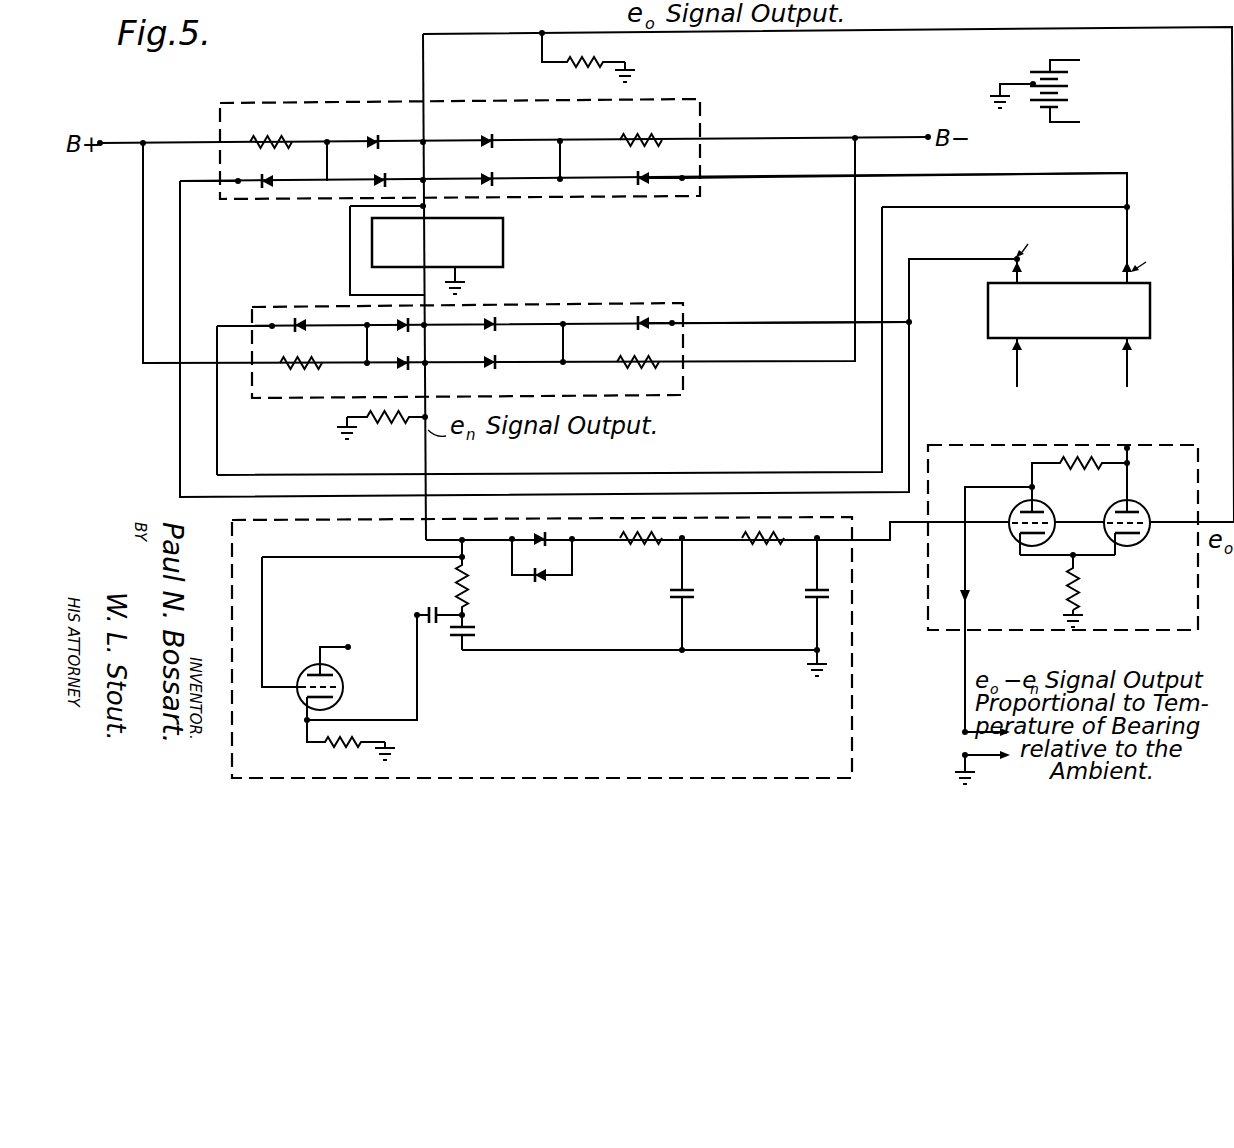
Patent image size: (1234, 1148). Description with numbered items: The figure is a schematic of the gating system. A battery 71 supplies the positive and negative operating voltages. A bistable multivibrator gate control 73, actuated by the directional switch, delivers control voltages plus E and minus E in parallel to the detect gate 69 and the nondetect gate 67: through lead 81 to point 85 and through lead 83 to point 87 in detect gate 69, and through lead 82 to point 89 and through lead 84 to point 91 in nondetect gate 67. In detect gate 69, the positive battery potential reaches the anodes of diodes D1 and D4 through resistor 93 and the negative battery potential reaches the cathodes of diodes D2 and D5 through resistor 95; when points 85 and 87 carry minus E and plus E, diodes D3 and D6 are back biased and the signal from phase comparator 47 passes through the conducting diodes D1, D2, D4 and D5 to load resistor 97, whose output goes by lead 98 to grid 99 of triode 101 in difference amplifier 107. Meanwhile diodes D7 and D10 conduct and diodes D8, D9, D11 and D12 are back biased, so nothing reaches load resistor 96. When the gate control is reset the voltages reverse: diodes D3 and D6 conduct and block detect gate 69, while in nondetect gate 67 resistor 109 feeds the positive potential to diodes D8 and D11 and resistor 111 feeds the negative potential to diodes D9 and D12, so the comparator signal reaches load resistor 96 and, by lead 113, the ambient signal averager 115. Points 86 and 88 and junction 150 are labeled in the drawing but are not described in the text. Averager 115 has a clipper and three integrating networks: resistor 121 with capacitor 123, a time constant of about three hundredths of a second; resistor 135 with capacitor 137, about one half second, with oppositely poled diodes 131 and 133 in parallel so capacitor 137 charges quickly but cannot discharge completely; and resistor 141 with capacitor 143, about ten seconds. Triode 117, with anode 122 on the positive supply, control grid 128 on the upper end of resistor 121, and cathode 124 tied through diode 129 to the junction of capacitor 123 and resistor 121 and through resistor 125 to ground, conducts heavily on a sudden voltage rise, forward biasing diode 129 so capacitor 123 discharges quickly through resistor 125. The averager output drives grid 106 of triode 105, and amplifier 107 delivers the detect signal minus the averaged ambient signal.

The detect gate 69 is at (338, 102).
The resistor 93 is at (292, 140).
The resistor 95 is at (662, 138).
The diode D1 is at (378, 130).
The diode D2 is at (494, 128).
The diode D3 is at (267, 172).
The diode D4 is at (382, 170).
The diode D5 is at (490, 170).
The diode D6 is at (643, 168).
The point 85 is at (685, 177).
The conductor 86 is at (560, 188).
The point 87 is at (238, 186).
The conductor 88 is at (327, 188).
The conductor 150 is at (424, 209).
The phase comparator 47 is at (500, 212).
The load resistor 97 is at (573, 68).
The lead 98 is at (1134, 31).
The battery 71 is at (1068, 98).
The lead 81 is at (1122, 176).
The lead 82 is at (994, 210).
The nondetect gate 67 is at (322, 316).
The point 89 is at (272, 327).
The diode D7 is at (300, 332).
The diode D8 is at (410, 330).
The diode D9 is at (495, 330).
The diode D10 is at (640, 328).
The diode D11 is at (410, 370).
The diode D12 is at (495, 370).
The resistor 109 is at (305, 370).
The resistor 111 is at (622, 366).
The point 91 is at (674, 321).
The lead 84 is at (806, 318).
The lead 83 is at (910, 326).
The bistable multivibrator gate control 73 is at (1150, 312).
The load resistor 96 is at (395, 426).
The lead 113 is at (428, 461).
The ambient signal averager 115 is at (520, 745).
The diode 129 is at (428, 610).
The resistor 121 is at (468, 588).
The capacitor 123 is at (481, 630).
The diode 131 is at (540, 534).
The diode 133 is at (545, 582).
The resistor 135 is at (655, 544).
The capacitor 137 is at (688, 592).
The resistor 141 is at (776, 544).
The capacitor 143 is at (810, 606).
The triode 117 is at (342, 680).
The anode 122 is at (315, 648).
The control grid 128 is at (298, 684).
The cathode 124 is at (336, 700).
The resistor 125 is at (351, 752).
The triode 105 is at (1044, 512).
The triode 101 is at (1129, 510).
The grid 99 is at (1152, 525).
The grid 106 is at (1012, 535).
The difference amplifier 107 is at (1136, 636).